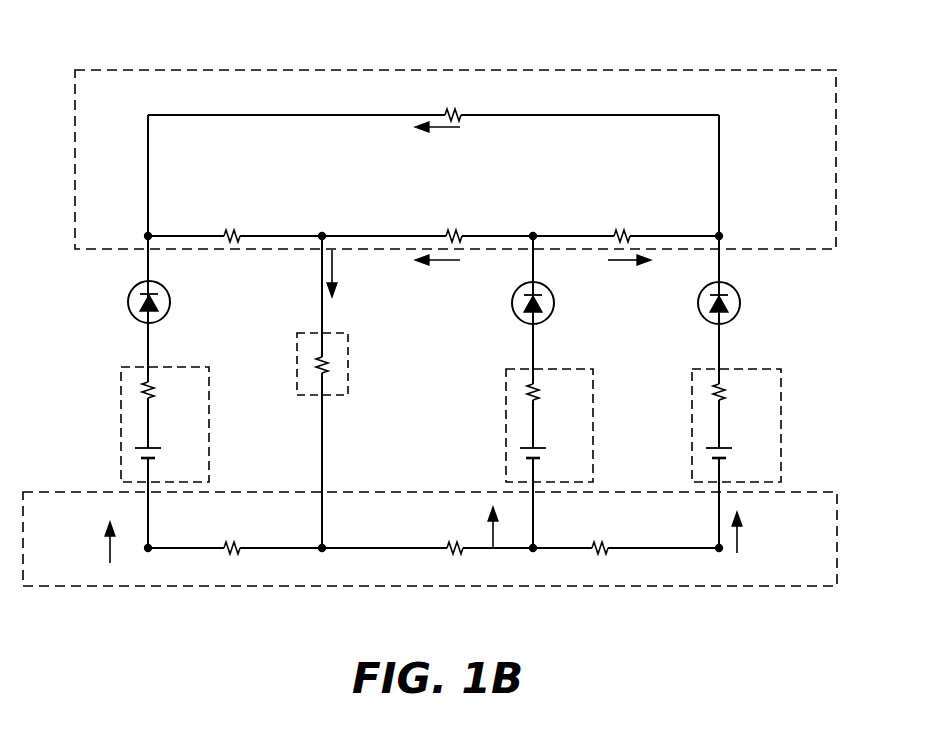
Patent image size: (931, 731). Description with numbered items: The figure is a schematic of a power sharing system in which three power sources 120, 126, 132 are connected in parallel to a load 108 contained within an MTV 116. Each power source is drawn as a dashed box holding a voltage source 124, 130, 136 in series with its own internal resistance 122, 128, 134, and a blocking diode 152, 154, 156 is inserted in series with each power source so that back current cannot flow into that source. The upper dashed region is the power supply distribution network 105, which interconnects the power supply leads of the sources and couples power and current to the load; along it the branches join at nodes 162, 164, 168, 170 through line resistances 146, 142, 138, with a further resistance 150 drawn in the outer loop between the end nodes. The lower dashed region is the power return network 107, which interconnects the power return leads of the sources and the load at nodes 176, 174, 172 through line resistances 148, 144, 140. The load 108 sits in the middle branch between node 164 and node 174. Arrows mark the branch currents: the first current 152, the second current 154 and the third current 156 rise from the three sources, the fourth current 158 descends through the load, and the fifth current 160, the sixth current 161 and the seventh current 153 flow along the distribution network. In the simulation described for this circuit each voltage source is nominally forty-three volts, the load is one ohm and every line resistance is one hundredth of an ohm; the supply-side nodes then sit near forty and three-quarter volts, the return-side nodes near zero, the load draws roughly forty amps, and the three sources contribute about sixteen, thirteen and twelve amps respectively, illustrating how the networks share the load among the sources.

The power supply distribution network 105 is at (702, 70).
The power return network 107 is at (680, 587).
The load 108 is at (350, 381).
The MTV 116 is at (350, 352).
The power source 120 is at (772, 399).
The internal resistance 122 is at (717, 392).
The voltage source 124 is at (717, 451).
The power source 126 is at (584, 399).
The internal resistance 128 is at (531, 392).
The voltage source 130 is at (531, 451).
The power source 132 is at (201, 399).
The internal resistance 134 is at (146, 390).
The voltage source 136 is at (146, 451).
The line resistance 138 is at (622, 232).
The line resistance 140 is at (600, 552).
The line resistance 142 is at (454, 232).
The line resistance 144 is at (455, 552).
The line resistance 146 is at (232, 232).
The line resistance 148 is at (232, 545).
The top connection resistance 150 is at (453, 112).
The blocking diode 152 is at (741, 302).
The current I7 153 is at (438, 263).
The blocking diode 154 is at (551, 285).
The blocking diode 156 is at (128, 302).
The current I4 158 is at (324, 296).
The current I5 160 is at (431, 130).
The current I6 161 is at (623, 265).
The node 162 is at (147, 236).
The node 164 is at (322, 232).
The node 168 is at (533, 234).
The node 170 is at (722, 237).
The node 172 is at (721, 551).
The node 174 is at (324, 551).
The node 176 is at (150, 551).